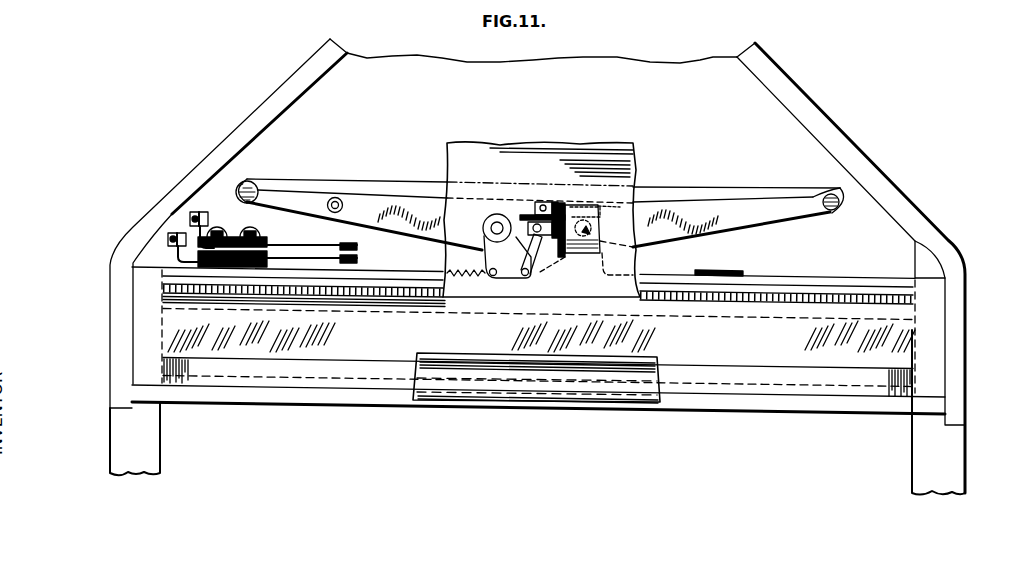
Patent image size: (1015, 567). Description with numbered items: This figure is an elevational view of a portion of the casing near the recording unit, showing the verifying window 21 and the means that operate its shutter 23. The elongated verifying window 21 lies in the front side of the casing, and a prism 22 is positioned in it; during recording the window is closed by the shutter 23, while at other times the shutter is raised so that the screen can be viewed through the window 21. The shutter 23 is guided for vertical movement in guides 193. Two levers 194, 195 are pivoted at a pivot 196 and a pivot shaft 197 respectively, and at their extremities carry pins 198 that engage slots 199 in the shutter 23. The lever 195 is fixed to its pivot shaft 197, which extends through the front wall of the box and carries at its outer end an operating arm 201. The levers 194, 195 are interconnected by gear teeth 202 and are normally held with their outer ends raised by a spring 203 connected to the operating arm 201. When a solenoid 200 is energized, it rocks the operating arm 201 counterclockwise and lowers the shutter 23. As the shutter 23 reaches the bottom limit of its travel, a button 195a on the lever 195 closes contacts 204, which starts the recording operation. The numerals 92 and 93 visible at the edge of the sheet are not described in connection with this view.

The verifying window 21 is at (788, 307).
The prism 22 is at (350, 338).
The shutter 23 is at (540, 225).
The part of adjacent figure 92 is at (1003, 2).
The part of adjacent figure 93 is at (957, 8).
The guides 193 is at (143, 310).
The lever 194 is at (677, 210).
The lever 195 is at (405, 205).
The button 195a is at (334, 197).
The pivot 196 is at (636, 253).
The pivot shaft 197 is at (499, 222).
The pins 198 is at (262, 182).
The slots 199 is at (236, 187).
The solenoid 200 is at (575, 207).
The operating arm 201 is at (482, 256).
The gear teeth 202 is at (541, 242).
The spring 203 is at (464, 278).
The contacts 204 is at (336, 249).